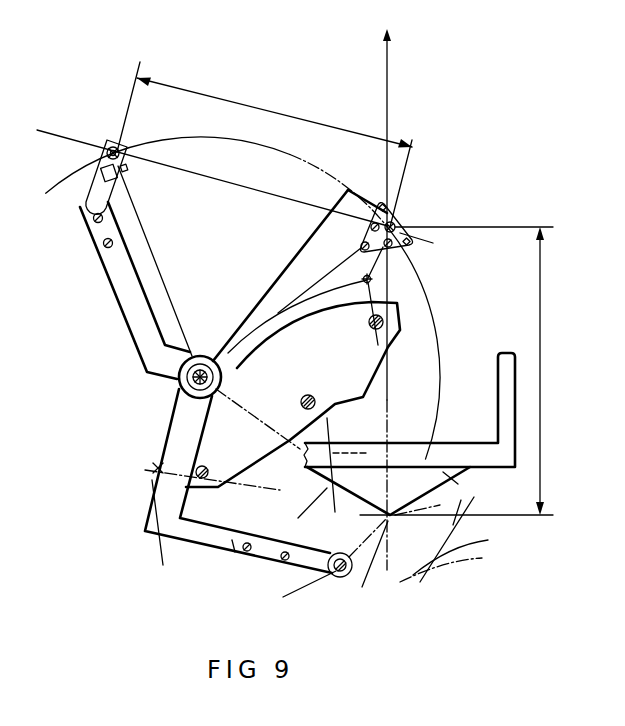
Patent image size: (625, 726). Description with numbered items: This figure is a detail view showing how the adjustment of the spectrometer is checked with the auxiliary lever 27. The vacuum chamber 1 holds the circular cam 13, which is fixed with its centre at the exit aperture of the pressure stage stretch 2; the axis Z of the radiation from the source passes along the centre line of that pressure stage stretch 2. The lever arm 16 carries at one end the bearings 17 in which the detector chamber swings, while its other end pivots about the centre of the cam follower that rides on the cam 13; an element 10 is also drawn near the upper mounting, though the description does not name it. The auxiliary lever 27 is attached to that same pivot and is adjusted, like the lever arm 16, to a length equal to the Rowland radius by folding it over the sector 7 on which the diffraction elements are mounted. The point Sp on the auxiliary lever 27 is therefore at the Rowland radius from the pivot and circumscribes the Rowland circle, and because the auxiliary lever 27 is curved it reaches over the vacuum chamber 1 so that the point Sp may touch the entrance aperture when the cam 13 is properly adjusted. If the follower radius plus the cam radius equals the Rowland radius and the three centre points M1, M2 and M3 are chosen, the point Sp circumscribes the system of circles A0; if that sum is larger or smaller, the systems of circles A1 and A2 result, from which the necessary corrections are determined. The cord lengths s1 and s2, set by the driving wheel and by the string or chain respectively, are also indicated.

The vacuum chamber 1 is at (502, 382).
The pressure stage stretch 2 is at (389, 491).
The sector 7 is at (320, 237).
The mounting bracket 10 is at (400, 217).
The circular cam 13 is at (302, 379).
The lever arm 16 is at (113, 263).
The bearings 17 is at (128, 141).
The auxiliary lever 27 is at (193, 534).
The centre point M1 is at (196, 476).
The centre point M2 is at (186, 381).
The centre point M3 is at (360, 271).
The system of circles A0 is at (370, 523).
The system of circles A1 is at (304, 503).
The system of circles A2 is at (456, 539).
The point Sp is at (334, 563).
The cord S1 s1 is at (456, 371).
The cord S2 s2 is at (264, 144).
The radiation axis Z is at (386, 285).